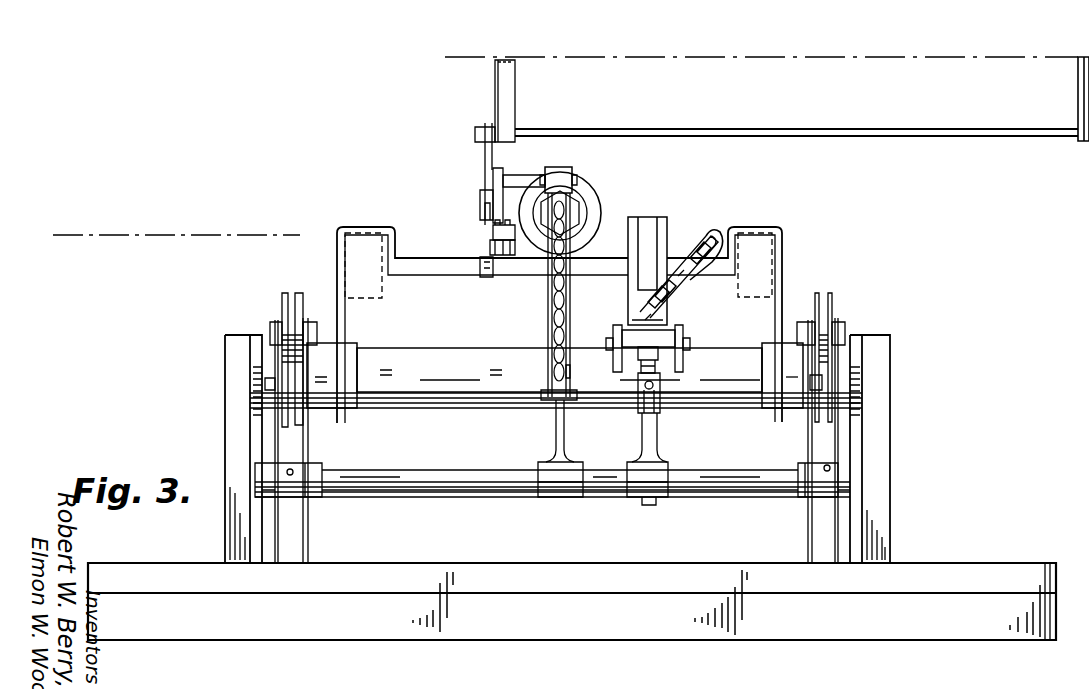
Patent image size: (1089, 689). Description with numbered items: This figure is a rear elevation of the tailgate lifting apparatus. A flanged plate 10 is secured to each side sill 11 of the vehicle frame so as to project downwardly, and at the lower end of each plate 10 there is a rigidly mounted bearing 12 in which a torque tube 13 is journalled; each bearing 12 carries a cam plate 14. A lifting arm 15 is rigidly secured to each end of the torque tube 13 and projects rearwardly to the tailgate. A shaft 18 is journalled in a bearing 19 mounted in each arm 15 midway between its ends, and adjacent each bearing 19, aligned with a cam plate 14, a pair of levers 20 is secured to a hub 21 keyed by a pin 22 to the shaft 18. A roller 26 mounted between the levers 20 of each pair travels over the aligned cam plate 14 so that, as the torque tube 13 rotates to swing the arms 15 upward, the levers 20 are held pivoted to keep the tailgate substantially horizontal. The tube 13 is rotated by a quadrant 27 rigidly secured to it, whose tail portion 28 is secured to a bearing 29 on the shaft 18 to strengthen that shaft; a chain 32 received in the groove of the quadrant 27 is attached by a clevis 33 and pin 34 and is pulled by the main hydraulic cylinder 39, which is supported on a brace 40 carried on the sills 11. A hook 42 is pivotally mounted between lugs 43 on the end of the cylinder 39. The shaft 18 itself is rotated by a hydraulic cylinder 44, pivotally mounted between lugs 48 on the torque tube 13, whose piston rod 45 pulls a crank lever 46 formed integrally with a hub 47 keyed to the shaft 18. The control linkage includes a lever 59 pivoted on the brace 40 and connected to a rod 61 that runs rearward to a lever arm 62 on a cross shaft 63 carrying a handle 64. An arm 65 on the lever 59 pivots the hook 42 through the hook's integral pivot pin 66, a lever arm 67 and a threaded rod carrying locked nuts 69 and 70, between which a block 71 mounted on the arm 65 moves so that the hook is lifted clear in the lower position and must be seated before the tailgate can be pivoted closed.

The flanged plate 10 is at (345, 328).
The sill 11 is at (382, 298).
The bearing 12 is at (320, 405).
The torque tube 13 is at (490, 385).
The cam plate 14 is at (290, 380).
The lifting arm 15 is at (232, 423).
The shaft 18 is at (455, 490).
The bearing 19 is at (267, 487).
The lever 20 is at (283, 540).
The hub 21 is at (303, 500).
The pin 22 is at (290, 469).
The roller 26 is at (285, 310).
The quadrant 27 is at (571, 312).
The tail portion 28 is at (566, 438).
The bearing 29 is at (575, 497).
The chain 32 is at (550, 300).
The clevis 33 is at (571, 372).
The pin 34 is at (575, 396).
The main hydraulic cylinder 39 is at (592, 200).
The brace 40 is at (427, 275).
The hook 42 is at (566, 165).
The lug 43 is at (555, 168).
The hydraulic cylinder 44 is at (652, 222).
The piston rod 45 is at (658, 352).
The crank lever 46 is at (655, 443).
The hub 47 is at (660, 497).
The lug 48 is at (615, 338).
The lever 59 is at (483, 220).
The rod 61 is at (484, 157).
The lever arm 62 is at (488, 127).
The cross shaft 63 is at (778, 128).
The handle 64 is at (1078, 99).
The arm 65 is at (490, 250).
The pivot pin 66 is at (522, 175).
The lever arm 67 is at (503, 178).
The nut 69 is at (490, 272).
The nut 70 is at (492, 234).
The block 71 is at (500, 265).